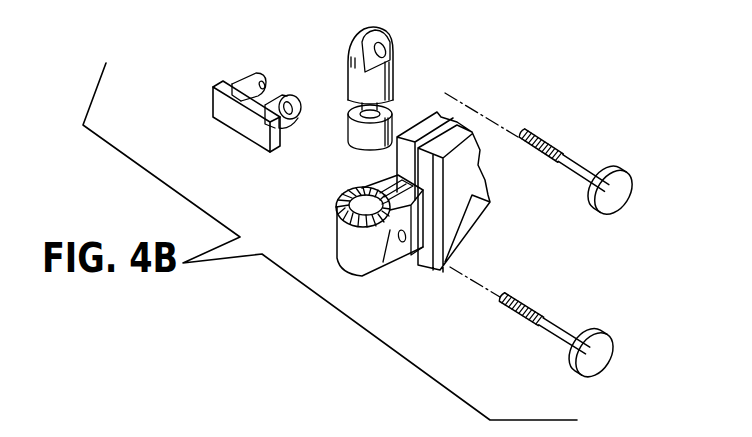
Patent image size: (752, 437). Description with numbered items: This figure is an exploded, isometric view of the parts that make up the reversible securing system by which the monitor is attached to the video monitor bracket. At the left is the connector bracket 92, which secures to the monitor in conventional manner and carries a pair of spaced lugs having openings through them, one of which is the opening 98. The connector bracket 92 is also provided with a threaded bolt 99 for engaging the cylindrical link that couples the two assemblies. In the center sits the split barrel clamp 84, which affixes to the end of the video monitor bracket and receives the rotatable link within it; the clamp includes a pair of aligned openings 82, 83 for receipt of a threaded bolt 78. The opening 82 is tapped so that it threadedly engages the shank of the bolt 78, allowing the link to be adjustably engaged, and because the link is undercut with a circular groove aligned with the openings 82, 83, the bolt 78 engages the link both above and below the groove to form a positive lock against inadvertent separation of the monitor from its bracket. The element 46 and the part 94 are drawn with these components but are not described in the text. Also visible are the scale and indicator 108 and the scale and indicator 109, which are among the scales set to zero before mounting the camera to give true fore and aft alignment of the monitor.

The wedge block 46 is at (463, 210).
The threaded bolt 78 is at (604, 357).
The opening 82 is at (363, 208).
The opening 83 is at (402, 242).
The split barrel clamp 84 is at (352, 248).
The connector bracket 92 is at (233, 83).
The clevis pivot 94 is at (390, 47).
The opening 98 is at (299, 116).
The threaded bolt 99 is at (618, 196).
The scale and indicator 108 is at (352, 62).
The scale and indicator 109 is at (337, 207).